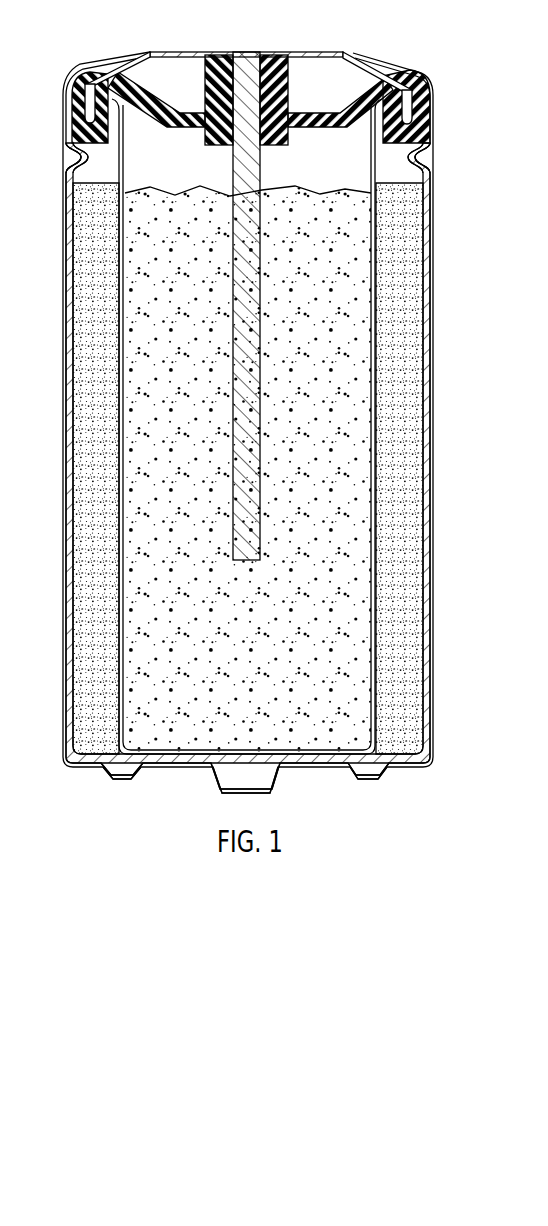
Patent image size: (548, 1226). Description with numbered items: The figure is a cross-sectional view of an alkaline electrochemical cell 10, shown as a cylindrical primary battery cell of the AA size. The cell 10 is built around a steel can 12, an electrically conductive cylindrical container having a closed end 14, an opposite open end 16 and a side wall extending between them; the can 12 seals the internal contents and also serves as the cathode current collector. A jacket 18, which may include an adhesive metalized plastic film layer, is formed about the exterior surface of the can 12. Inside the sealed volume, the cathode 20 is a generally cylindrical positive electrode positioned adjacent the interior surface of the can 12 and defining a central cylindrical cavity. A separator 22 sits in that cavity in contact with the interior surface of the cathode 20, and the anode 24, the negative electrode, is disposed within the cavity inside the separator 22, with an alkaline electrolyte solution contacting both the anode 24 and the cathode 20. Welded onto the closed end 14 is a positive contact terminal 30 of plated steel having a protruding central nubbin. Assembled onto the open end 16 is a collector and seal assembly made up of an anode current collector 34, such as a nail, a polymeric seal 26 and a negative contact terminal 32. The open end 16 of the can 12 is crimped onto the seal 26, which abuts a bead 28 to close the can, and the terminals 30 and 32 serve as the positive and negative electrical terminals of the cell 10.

The alkaline electrochemical cell 10 is at (386, 32).
The steel can 12 is at (426, 203).
The closed end 14 is at (368, 777).
The open end 16 is at (393, 72).
The jacket 18 is at (431, 242).
The cathode 20 is at (406, 303).
The separator 22 is at (373, 362).
The anode 24 is at (336, 428).
The seal 26 is at (428, 132).
The bead 28 is at (424, 157).
The positive contact terminal 30 is at (263, 794).
The negative contact terminal 32 is at (192, 50).
The anode current collector 34 is at (246, 67).